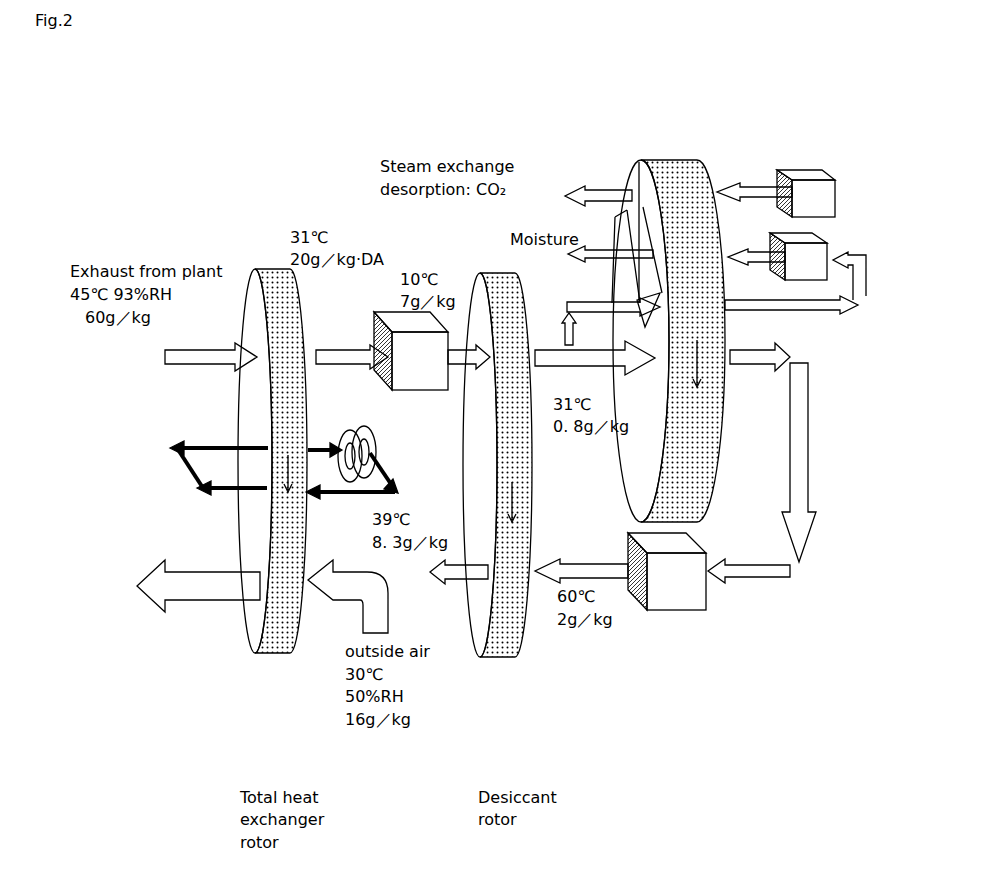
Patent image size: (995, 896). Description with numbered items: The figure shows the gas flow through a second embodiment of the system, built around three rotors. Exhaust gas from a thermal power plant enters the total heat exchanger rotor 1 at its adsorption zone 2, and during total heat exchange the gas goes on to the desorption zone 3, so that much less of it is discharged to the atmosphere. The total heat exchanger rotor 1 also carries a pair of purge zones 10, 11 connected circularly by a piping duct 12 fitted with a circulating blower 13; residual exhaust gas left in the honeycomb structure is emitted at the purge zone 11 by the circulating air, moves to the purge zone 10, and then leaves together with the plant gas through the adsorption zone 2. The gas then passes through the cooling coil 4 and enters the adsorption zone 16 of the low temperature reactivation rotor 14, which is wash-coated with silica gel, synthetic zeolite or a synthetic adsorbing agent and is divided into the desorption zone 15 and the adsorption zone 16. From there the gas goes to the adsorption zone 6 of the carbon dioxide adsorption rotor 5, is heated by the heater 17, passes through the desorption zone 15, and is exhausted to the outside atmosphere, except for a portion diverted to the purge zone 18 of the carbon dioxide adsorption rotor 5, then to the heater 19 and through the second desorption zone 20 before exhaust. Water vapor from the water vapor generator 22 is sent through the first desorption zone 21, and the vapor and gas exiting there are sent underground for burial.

The total heat exchanger rotor 1 is at (266, 648).
The adsorption zone 2 is at (252, 290).
The desorption zone 3 is at (253, 610).
The cooling coil 4 is at (376, 318).
The carbon dioxide adsorption rotor 5 is at (703, 523).
The adsorption zone 6 is at (630, 467).
The purge zone 10 is at (238, 447).
The purge zone 11 is at (263, 498).
The piping duct 12 is at (186, 483).
The circulating blower 13 is at (372, 445).
The low temperature reactivation rotor 14 is at (508, 658).
The desorption zone 15 is at (478, 590).
The adsorption zone 16 is at (477, 407).
The heater 17 is at (677, 614).
The purge zone 18 is at (621, 210).
The heater 19 is at (801, 280).
The second desorption zone 20 is at (647, 217).
The first desorption zone 21 is at (658, 292).
The water vapor generator 22 is at (783, 173).